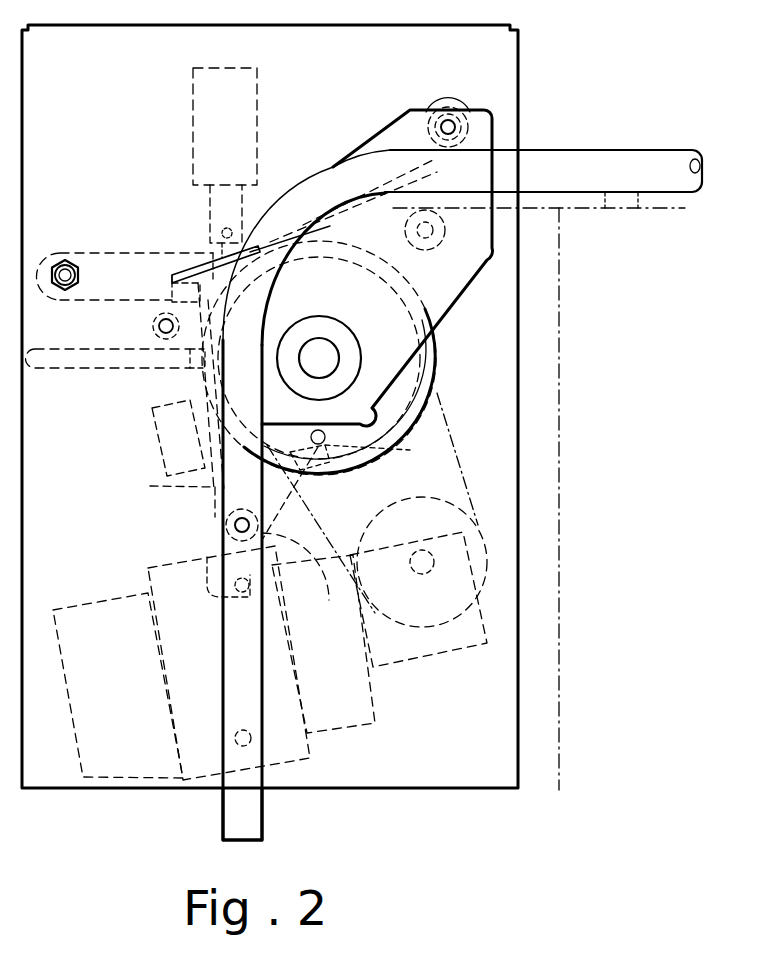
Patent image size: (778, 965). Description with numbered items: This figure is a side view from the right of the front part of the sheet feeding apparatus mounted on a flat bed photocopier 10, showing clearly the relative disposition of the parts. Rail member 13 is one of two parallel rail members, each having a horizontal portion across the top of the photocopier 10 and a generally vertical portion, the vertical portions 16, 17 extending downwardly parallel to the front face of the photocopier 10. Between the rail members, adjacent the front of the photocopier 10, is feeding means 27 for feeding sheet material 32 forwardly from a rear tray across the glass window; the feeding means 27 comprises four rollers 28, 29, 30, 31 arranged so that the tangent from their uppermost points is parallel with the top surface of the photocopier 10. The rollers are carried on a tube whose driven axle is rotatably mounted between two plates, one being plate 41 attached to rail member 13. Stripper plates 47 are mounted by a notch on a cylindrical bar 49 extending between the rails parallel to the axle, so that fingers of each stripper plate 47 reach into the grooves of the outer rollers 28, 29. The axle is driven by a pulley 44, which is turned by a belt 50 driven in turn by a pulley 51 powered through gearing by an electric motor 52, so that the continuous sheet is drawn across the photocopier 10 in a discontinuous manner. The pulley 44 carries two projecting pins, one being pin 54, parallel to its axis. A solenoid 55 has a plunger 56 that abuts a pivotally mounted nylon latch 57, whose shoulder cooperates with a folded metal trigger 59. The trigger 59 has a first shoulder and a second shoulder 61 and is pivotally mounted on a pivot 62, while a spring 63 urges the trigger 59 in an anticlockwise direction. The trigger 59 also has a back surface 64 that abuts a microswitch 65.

The flat bed photocopier 10 is at (688, 318).
The rail member 13 is at (620, 175).
The vertical portion 16 is at (243, 822).
The vertical portion 17 is at (242, 814).
The feeding means 27 is at (525, 352).
The roller 28 is at (319, 358).
The roller 29 is at (427, 405).
The roller 30 is at (319, 358).
The roller 31 is at (319, 358).
The sheet material 32 is at (545, 205).
The plate 41 is at (460, 270).
The pulley 44 is at (437, 353).
The stripper plate 47 is at (283, 507).
The cylindrical bar 49 is at (261, 656).
The belt 50 is at (435, 398).
The pulley 51 is at (422, 628).
The electric motor 52 is at (110, 600).
The pin 54 is at (375, 447).
The solenoid 55 is at (262, 103).
The plunger 56 is at (210, 213).
The latch 57 is at (120, 253).
The trigger 59 is at (140, 304).
The second shoulder 61 is at (320, 478).
The pivot 62 is at (235, 525).
The spring 63 is at (72, 362).
The back surface 64 is at (172, 490).
The microswitch 65 is at (155, 428).